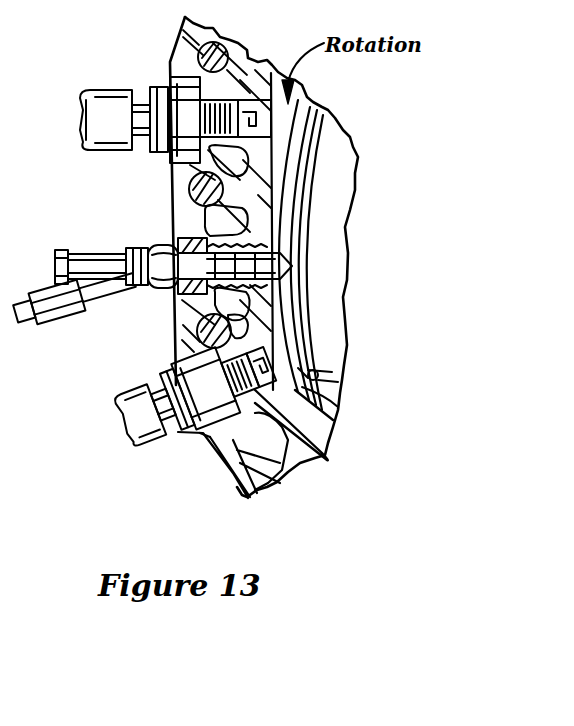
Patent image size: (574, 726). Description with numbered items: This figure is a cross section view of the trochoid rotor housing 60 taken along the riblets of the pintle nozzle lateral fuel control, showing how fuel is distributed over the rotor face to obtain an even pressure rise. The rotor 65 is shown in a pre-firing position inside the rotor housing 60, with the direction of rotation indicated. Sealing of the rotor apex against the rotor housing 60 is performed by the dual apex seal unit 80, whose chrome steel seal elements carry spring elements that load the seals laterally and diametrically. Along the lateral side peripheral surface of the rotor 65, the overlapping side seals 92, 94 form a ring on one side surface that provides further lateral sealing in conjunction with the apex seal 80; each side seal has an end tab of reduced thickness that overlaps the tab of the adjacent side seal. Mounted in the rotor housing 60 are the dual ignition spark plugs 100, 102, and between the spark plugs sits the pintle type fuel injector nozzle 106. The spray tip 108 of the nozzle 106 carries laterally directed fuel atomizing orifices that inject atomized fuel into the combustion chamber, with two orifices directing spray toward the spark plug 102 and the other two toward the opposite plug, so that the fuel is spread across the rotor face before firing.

The rotor housing 60 is at (317, 450).
The rotor 65 is at (343, 257).
The dual apex seal unit 80 is at (340, 413).
The side seal 92 is at (310, 343).
The side seal 94 is at (340, 375).
The ignition spark plug 100 is at (182, 52).
The ignition spark plug 102 is at (233, 473).
The pintle type fuel injector nozzle 106 is at (175, 215).
The spray tip 108 is at (170, 355).